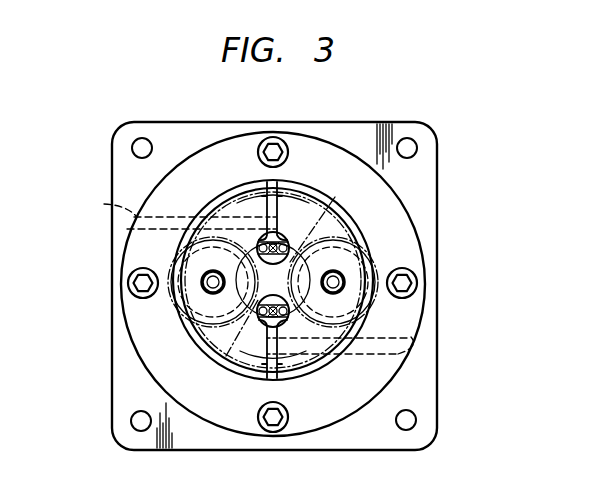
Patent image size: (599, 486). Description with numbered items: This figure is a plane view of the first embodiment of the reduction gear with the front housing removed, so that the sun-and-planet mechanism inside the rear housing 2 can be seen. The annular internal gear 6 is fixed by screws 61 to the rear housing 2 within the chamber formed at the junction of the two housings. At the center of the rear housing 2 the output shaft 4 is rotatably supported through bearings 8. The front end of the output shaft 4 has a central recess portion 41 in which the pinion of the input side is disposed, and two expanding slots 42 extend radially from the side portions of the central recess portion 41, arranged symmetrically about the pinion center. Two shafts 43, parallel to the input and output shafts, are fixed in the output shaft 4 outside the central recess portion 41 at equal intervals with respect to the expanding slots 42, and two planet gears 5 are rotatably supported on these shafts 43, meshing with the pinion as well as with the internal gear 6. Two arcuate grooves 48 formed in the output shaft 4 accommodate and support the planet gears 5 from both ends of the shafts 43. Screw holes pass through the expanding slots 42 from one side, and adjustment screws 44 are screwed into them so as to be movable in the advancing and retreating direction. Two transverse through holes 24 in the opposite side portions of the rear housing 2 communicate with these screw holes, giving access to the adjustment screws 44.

The rear housing 2 is at (438, 171).
The output shaft 4 is at (274, 182).
The planet gear 5 is at (362, 216).
The internal gear 6 is at (424, 305).
The bearing 8 is at (266, 236).
The transverse through hole 24 is at (127, 210).
The central recess portion 41 is at (341, 208).
The expanding slot 42 is at (281, 181).
The shaft 43 is at (213, 283).
The adjustment screw 44 is at (286, 240).
The arcuate groove 48 is at (335, 197).
The screw 61 is at (410, 268).